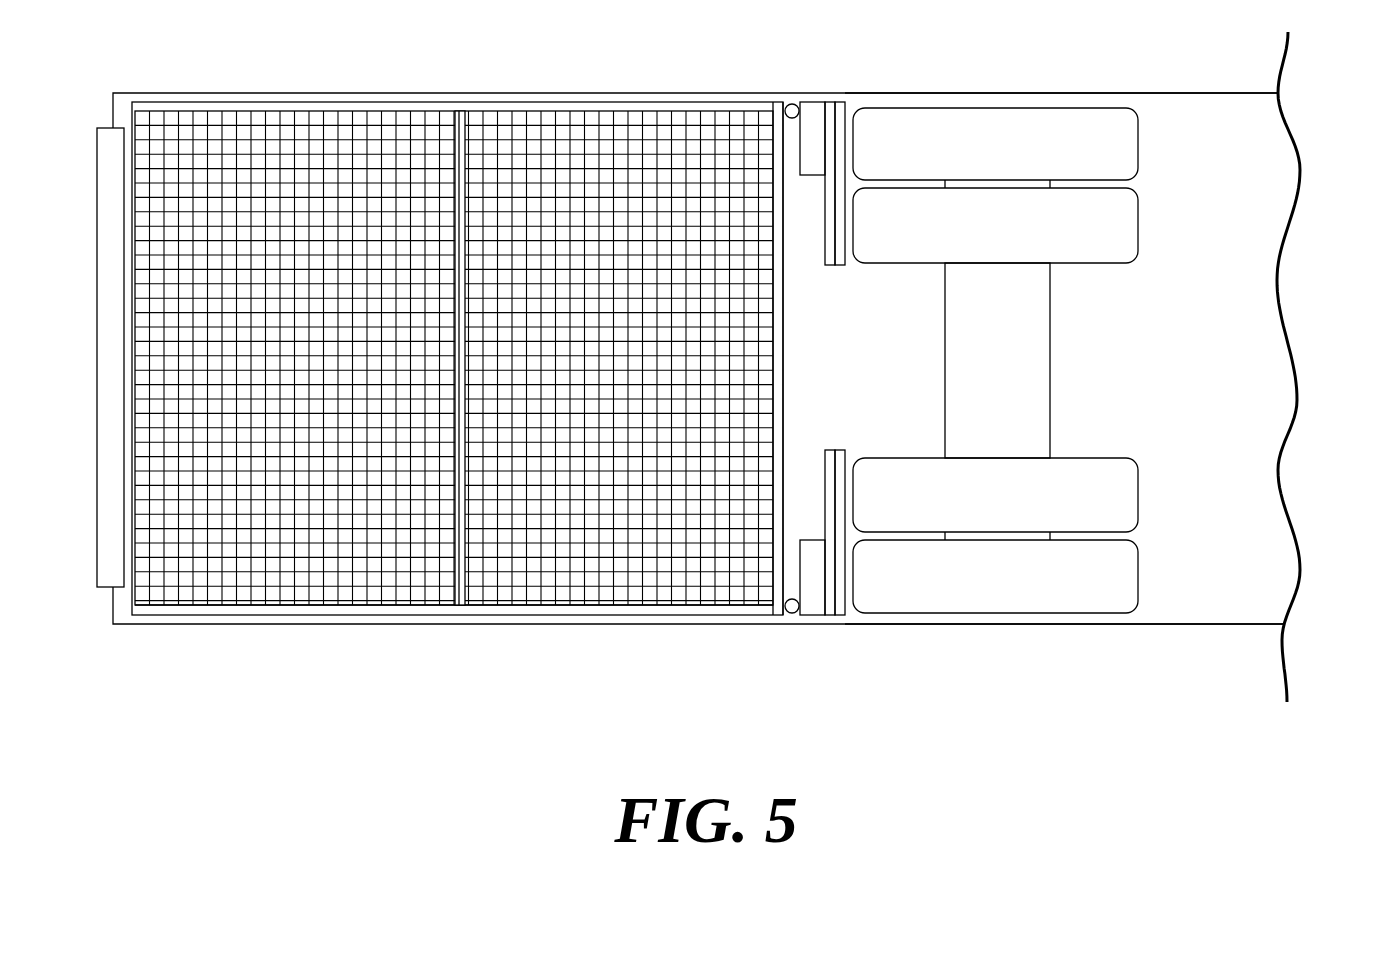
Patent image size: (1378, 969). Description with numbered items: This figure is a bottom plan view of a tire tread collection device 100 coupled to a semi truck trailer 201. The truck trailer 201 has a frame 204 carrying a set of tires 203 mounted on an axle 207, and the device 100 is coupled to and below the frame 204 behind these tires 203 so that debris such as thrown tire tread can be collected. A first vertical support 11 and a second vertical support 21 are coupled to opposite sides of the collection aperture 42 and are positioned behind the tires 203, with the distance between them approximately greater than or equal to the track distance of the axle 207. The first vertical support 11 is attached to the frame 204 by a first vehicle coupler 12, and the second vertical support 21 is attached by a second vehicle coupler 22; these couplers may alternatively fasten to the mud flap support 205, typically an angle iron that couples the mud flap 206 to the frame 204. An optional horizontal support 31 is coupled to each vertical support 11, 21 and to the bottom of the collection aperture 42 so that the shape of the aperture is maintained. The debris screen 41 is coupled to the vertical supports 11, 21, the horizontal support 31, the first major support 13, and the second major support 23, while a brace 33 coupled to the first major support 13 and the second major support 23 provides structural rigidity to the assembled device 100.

The tire tread collection device 100 is at (432, 83).
The frame 204 is at (627, 92).
The first major support 13 is at (215, 107).
The second major support 23 is at (215, 608).
The debris screen 41 is at (433, 210).
The brace 33 is at (461, 187).
The horizontal support 31 is at (784, 305).
The collection aperture 42 is at (791, 357).
The first vertical support 11 is at (786, 104).
The second vertical support 21 is at (789, 613).
The first vehicle coupler 12 is at (815, 105).
The second vehicle coupler 22 is at (815, 614).
The mud flap support 205 is at (832, 104).
The mud flap 206 is at (848, 110).
The tire 203 is at (1110, 147).
The axle 207 is at (1010, 388).
The truck trailer 201 is at (1258, 313).